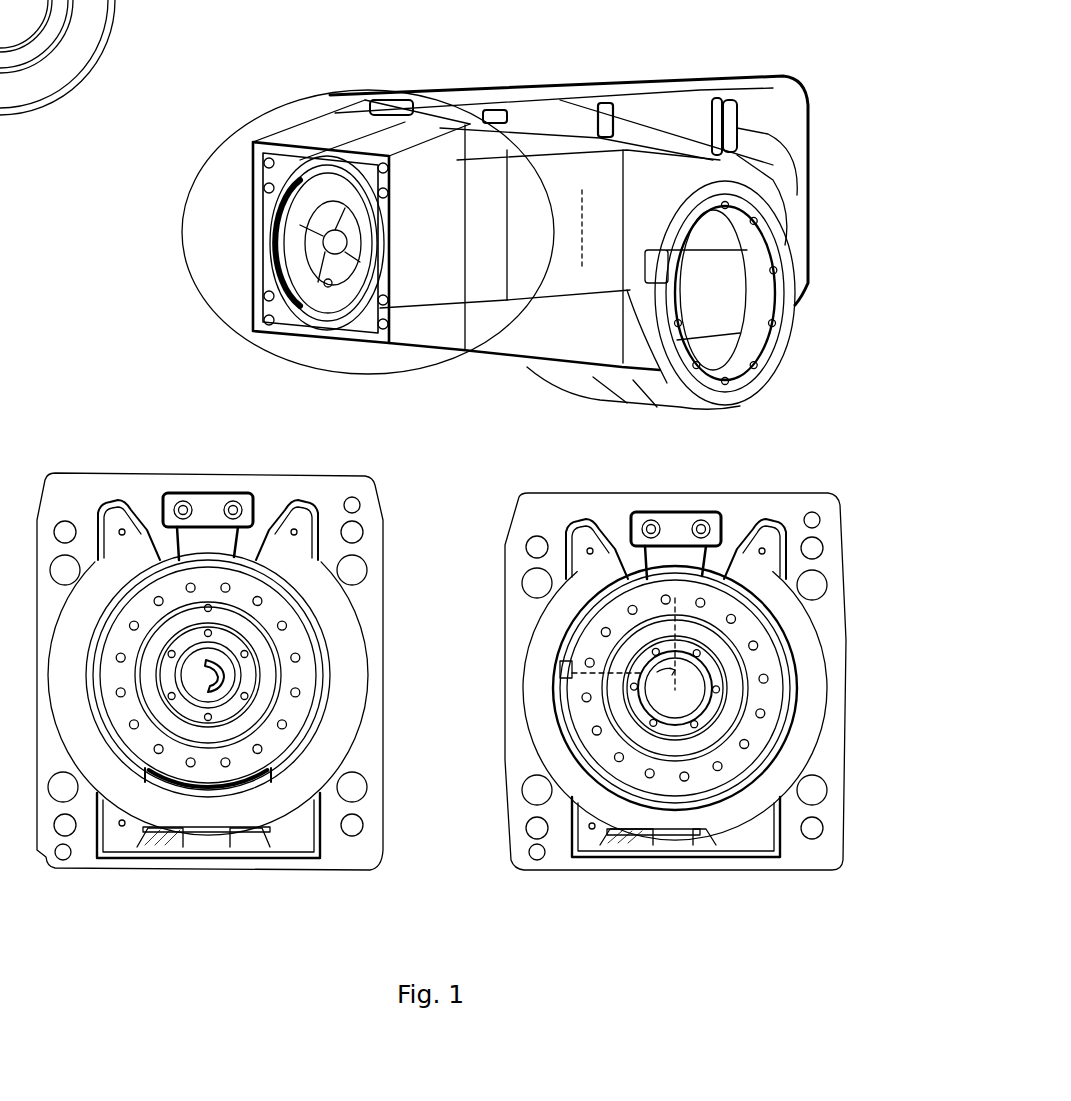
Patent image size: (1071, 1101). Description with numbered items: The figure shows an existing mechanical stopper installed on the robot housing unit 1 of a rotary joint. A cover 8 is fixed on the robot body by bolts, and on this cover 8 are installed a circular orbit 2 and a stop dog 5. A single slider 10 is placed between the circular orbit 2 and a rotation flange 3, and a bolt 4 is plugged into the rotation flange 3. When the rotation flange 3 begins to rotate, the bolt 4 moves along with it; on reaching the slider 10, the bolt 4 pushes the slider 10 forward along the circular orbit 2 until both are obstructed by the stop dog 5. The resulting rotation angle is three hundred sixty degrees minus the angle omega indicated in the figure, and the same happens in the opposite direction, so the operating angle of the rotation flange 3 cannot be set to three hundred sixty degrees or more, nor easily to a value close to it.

The robot housing unit 1 is at (207, 305).
The circular orbit 2 is at (320, 567).
The rotation flange 3 is at (293, 620).
The bolt 4 is at (220, 567).
The stop dog 5 is at (223, 530).
The cover 8 is at (322, 135).
The slider 10 is at (235, 790).